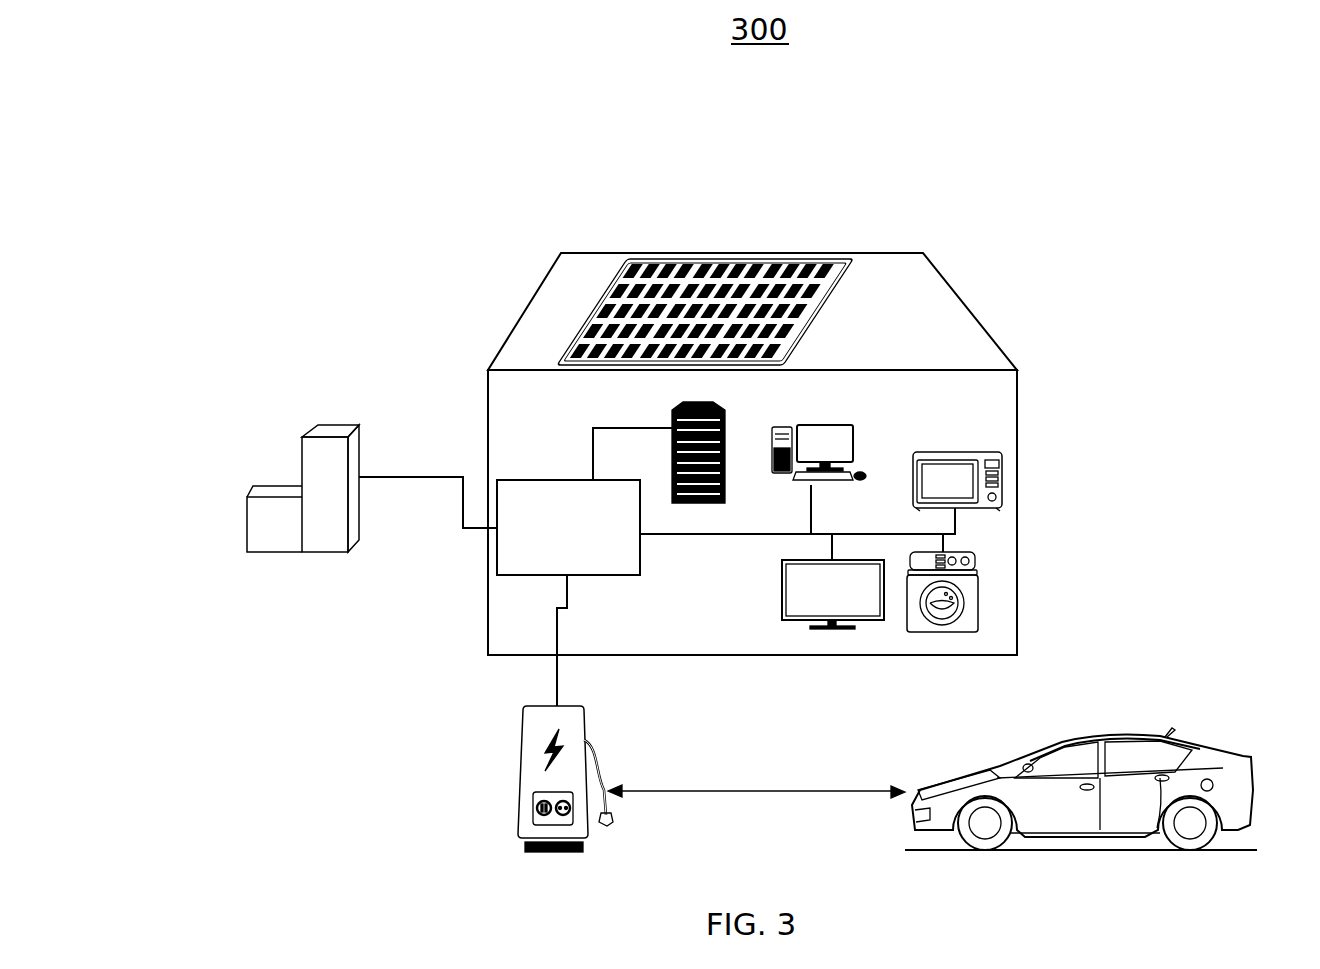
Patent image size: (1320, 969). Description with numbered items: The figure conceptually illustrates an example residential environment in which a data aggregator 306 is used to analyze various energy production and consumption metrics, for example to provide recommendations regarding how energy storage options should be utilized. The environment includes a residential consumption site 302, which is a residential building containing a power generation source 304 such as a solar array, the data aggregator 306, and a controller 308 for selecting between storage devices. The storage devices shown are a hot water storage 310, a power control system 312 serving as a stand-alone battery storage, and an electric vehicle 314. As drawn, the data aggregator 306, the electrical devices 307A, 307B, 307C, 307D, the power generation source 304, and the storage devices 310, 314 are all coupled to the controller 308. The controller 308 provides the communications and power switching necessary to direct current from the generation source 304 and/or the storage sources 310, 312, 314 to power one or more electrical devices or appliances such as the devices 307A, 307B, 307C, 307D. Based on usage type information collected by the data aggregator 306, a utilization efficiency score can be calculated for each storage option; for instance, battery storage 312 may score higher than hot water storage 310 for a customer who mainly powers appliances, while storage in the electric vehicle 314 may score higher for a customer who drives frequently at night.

The residential consumption site 302 is at (932, 253).
The power generation source 304 is at (630, 280).
The data aggregator 306 is at (672, 413).
The electrical device 307A is at (782, 594).
The electrical device 307B is at (843, 443).
The electrical device 307C is at (1003, 482).
The electrical device 307D is at (978, 608).
The controller 308 is at (568, 527).
The hot water storage 310 is at (315, 453).
The power control system 312 is at (527, 758).
The electric vehicle 314 is at (1123, 737).